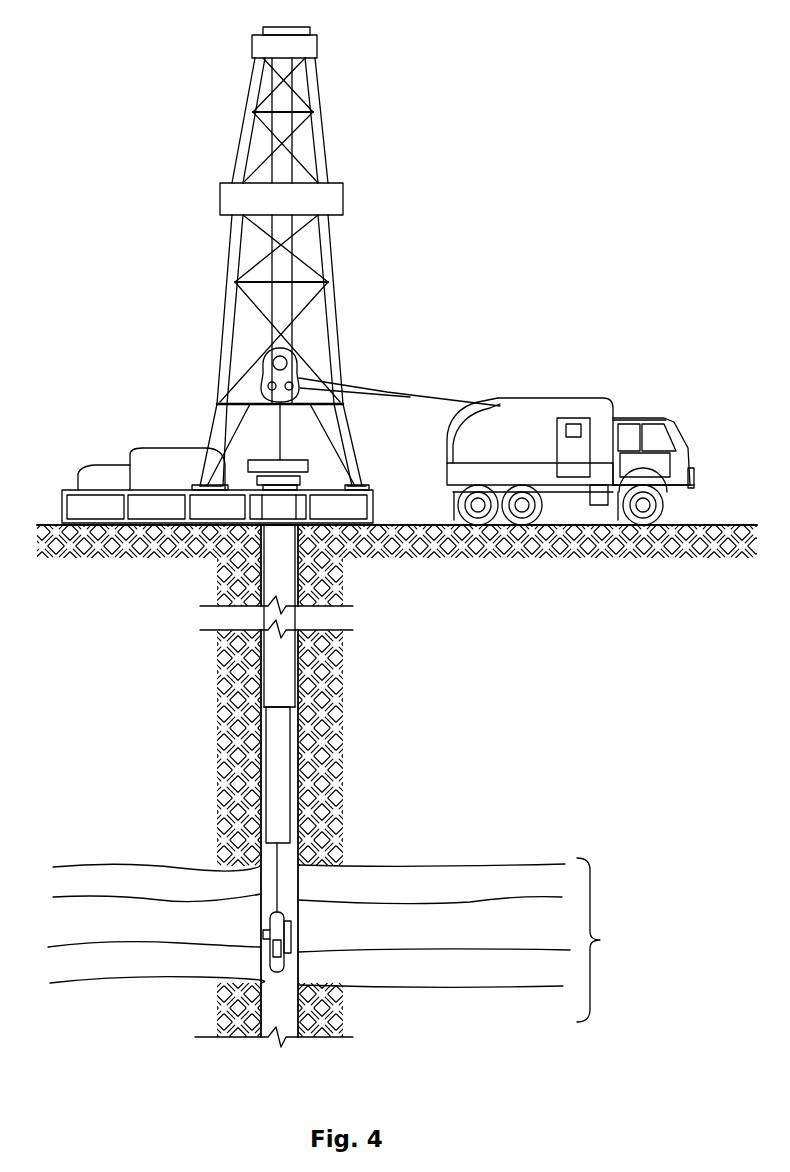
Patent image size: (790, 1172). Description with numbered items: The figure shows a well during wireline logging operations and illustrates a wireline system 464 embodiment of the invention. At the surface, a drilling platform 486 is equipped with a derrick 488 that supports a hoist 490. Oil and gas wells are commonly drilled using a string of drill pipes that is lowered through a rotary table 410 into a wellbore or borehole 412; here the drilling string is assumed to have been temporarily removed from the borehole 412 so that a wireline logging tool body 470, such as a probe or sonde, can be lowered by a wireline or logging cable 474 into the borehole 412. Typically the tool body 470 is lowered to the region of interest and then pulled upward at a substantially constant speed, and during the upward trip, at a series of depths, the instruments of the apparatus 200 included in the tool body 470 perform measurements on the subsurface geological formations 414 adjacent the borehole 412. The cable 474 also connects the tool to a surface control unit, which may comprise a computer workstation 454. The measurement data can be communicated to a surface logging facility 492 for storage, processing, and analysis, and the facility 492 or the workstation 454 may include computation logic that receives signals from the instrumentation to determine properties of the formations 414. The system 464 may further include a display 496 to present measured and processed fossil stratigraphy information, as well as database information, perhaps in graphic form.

The wireline system 464 is at (510, 210).
The hoist 490 is at (293, 355).
The wireline or logging cable 474 is at (387, 392).
The surface logging facility 492 is at (540, 398).
The display 496 is at (574, 422).
The rotary table 410 is at (303, 462).
The workstation 454 is at (557, 446).
The derrick 488 is at (364, 474).
The drilling platform 486 is at (372, 512).
The wellbore or borehole 412 is at (261, 876).
The wireline logging tool body 470 is at (285, 930).
The apparatus 200 is at (283, 962).
The subsurface geological formations 414 is at (614, 940).